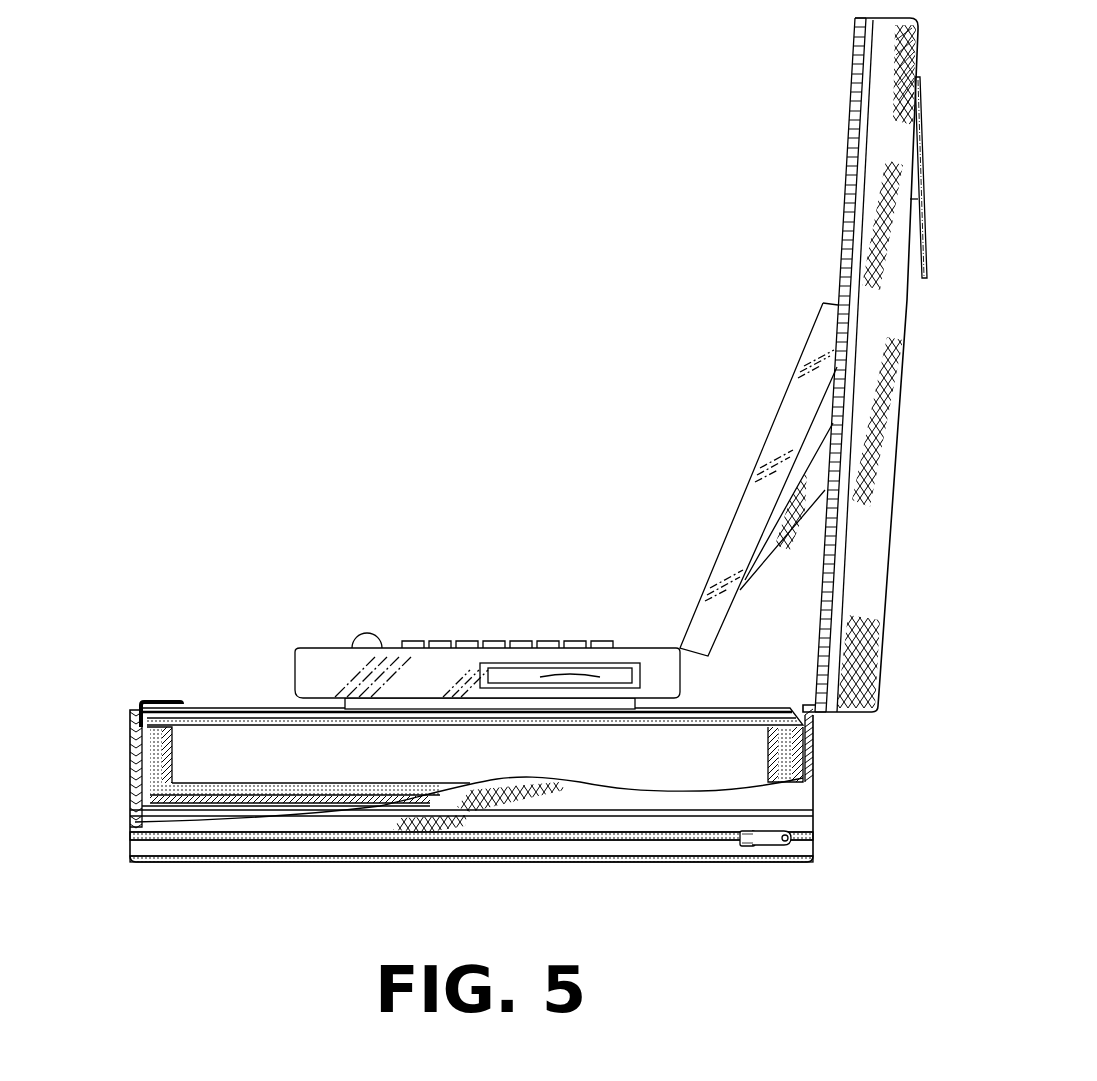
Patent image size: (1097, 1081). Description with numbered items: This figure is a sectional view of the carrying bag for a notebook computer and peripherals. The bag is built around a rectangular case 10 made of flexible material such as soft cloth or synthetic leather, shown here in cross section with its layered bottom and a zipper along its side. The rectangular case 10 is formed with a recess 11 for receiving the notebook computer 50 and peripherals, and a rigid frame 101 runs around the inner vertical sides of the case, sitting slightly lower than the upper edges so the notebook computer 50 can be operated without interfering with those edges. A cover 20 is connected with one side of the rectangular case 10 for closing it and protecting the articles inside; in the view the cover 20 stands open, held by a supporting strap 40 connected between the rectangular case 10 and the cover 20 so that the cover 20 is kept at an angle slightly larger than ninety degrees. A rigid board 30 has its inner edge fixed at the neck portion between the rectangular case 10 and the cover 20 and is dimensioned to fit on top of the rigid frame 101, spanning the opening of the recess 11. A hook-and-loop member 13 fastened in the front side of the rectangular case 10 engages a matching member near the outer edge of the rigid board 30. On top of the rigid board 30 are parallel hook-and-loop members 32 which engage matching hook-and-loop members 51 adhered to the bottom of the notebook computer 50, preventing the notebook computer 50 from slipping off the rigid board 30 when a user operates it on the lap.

The rectangular case 10 is at (800, 798).
The recess 11 is at (238, 762).
The rigid frame 101 is at (145, 737).
The hook-and-loop member 13 is at (158, 700).
The cover 20 is at (872, 588).
The rigid board 30 is at (730, 715).
The hook-and-loop members 32 is at (345, 719).
The supporting strap 40 is at (678, 622).
The notebook computer 50 is at (332, 663).
The hook-and-loop members 51 is at (385, 705).